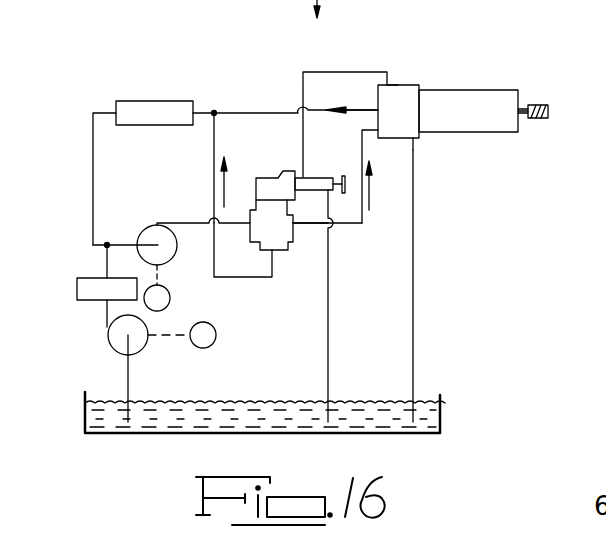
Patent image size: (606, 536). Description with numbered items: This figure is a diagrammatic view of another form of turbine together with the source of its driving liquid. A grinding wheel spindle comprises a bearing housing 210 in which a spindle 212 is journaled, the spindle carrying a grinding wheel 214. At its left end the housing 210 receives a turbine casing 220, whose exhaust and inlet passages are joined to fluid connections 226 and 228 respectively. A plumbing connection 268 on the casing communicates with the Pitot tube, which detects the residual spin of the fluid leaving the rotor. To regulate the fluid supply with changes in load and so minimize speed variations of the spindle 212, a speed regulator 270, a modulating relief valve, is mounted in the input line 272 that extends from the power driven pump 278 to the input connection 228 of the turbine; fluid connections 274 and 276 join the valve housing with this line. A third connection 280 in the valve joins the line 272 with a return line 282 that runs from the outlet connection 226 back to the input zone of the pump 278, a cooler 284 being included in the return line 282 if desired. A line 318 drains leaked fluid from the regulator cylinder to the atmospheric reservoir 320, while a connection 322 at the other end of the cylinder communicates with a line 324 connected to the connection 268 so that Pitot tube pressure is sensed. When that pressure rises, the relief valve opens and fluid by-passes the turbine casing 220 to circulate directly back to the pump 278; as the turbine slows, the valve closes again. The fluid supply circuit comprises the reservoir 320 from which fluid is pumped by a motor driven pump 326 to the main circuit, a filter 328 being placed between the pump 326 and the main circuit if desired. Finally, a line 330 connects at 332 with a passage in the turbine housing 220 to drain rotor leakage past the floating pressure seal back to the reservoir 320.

The bearing housing 210 is at (463, 100).
The spindle 212 is at (527, 105).
The grinding wheel 214 is at (546, 107).
The turbine casing 220 is at (403, 90).
The fluid connection 226 is at (375, 105).
The fluid connection 228 is at (365, 131).
The plumbing connection 268 is at (398, 84).
The speed regulator 270 is at (276, 247).
The input line 272 is at (187, 223).
The fluid connection 274 is at (245, 220).
The fluid connection 276 is at (297, 227).
The power driven pump 278 is at (147, 230).
The third connection 280 is at (272, 254).
The return line 282 is at (242, 110).
The cooler 284 is at (139, 101).
The line 318 is at (330, 338).
The atmospheric reservoir 320 is at (267, 414).
The connection 322 is at (303, 177).
The line 324 is at (312, 72).
The motor driven pump 326 is at (120, 349).
The filter 328 is at (77, 288).
The line 330 is at (415, 312).
The connection point 332 is at (415, 142).